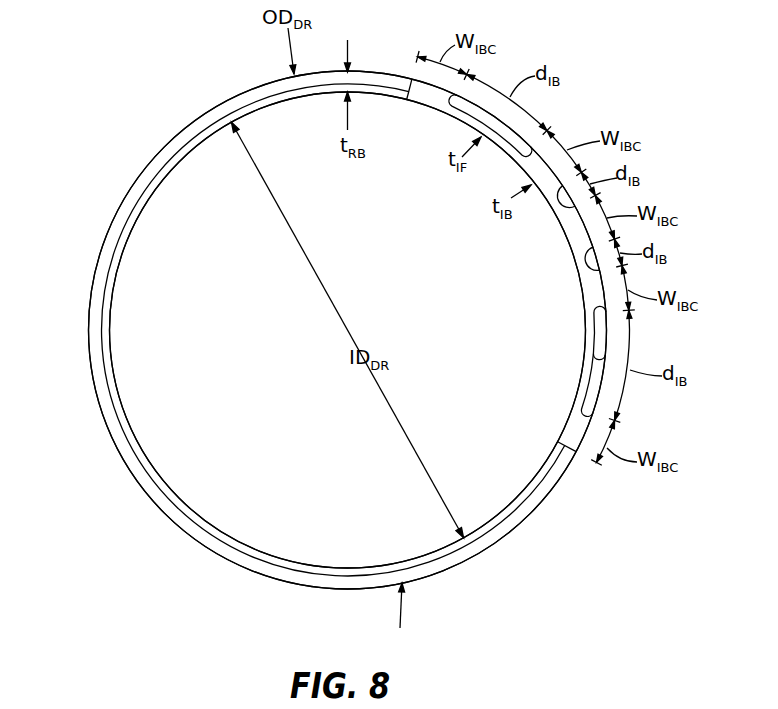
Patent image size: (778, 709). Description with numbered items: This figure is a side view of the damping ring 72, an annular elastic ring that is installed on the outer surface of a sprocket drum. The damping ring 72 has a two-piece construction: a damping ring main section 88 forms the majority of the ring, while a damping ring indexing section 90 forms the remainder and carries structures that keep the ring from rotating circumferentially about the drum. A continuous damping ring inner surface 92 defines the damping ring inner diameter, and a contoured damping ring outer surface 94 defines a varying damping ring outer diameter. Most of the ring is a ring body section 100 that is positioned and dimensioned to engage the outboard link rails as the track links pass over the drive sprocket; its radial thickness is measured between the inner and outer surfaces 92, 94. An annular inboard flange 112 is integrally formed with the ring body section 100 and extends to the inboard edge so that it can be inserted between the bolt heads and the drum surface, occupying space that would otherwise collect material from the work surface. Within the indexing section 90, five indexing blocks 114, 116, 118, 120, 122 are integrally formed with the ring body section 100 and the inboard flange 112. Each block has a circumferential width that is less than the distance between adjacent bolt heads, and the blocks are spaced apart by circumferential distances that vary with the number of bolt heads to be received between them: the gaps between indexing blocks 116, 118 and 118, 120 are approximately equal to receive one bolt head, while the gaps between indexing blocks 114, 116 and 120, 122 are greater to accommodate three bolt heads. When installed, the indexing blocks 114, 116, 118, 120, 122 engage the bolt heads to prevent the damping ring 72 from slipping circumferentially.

The damping ring 72 is at (104, 205).
The damping ring main section 88 is at (157, 153).
The damping ring indexing section 90 is at (613, 353).
The damping ring inner surface 92 is at (128, 418).
The damping ring outer surface 94 is at (108, 438).
The ring body section 100 is at (598, 334).
The inboard flange 112 is at (262, 550).
The indexing block 114 is at (415, 99).
The indexing block 116 is at (520, 162).
The indexing block 118 is at (573, 231).
The indexing block 120 is at (595, 294).
The indexing block 122 is at (568, 428).